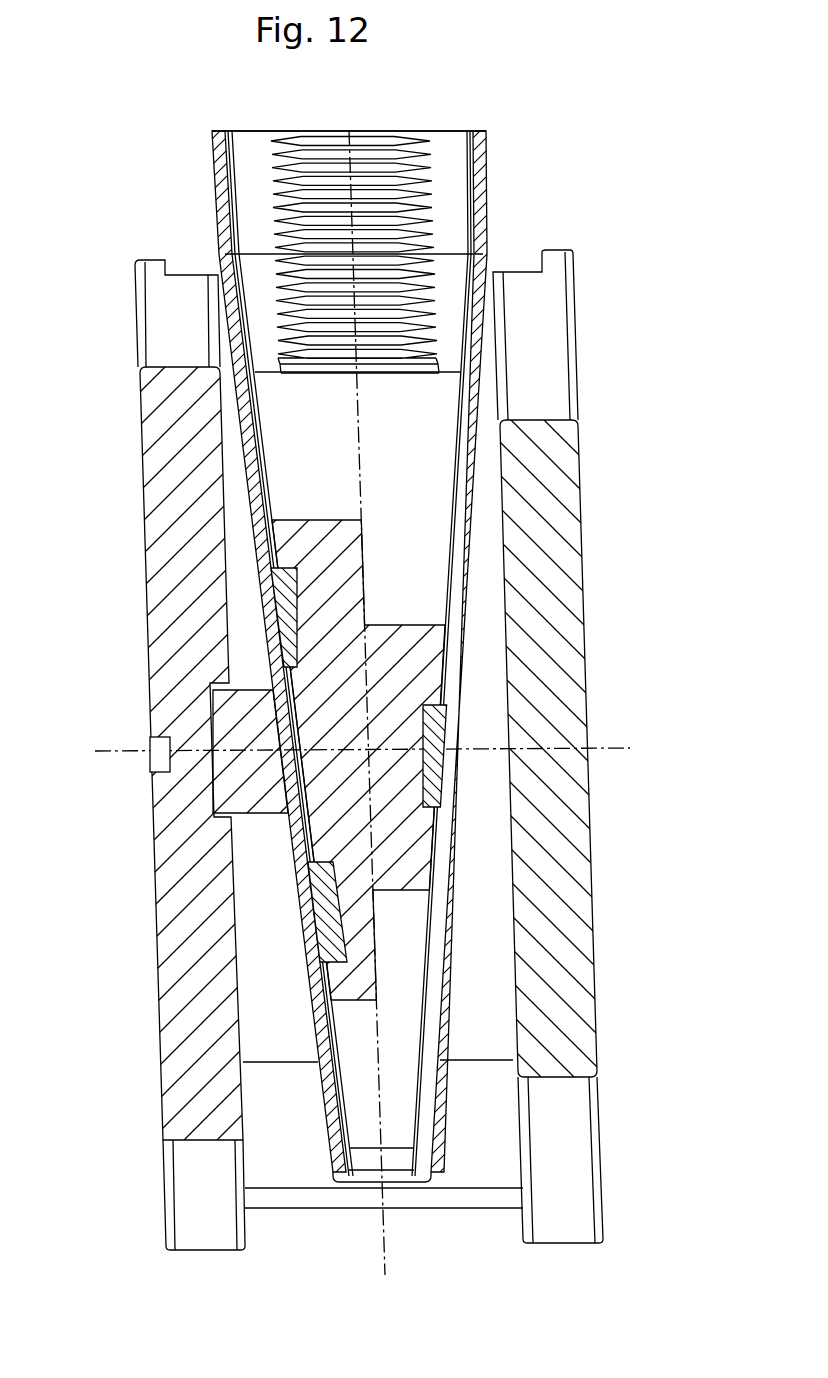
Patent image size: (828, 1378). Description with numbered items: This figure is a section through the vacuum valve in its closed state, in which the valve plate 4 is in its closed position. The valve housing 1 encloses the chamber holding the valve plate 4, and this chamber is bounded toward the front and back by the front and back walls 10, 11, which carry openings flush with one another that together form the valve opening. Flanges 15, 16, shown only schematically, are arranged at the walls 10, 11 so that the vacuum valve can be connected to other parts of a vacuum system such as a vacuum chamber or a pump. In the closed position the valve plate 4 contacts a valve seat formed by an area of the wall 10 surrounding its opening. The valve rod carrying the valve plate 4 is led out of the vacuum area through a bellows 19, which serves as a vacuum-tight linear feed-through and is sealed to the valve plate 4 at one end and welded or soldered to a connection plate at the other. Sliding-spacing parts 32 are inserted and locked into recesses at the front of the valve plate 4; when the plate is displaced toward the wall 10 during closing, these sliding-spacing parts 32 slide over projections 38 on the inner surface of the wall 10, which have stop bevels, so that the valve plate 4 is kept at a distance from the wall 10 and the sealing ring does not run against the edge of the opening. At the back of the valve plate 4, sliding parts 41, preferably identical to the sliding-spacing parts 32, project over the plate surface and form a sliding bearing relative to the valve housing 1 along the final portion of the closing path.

The valve housing 1 is at (508, 200).
The valve plate 4 is at (357, 1166).
The front wall 10 is at (468, 470).
The back wall 11 is at (252, 447).
The flange 15 is at (563, 977).
The flange 16 is at (193, 1032).
The bellows 19 is at (417, 180).
The sliding-spacing part 32 is at (440, 735).
The projection 38 is at (458, 617).
The sliding part 41 is at (282, 593).